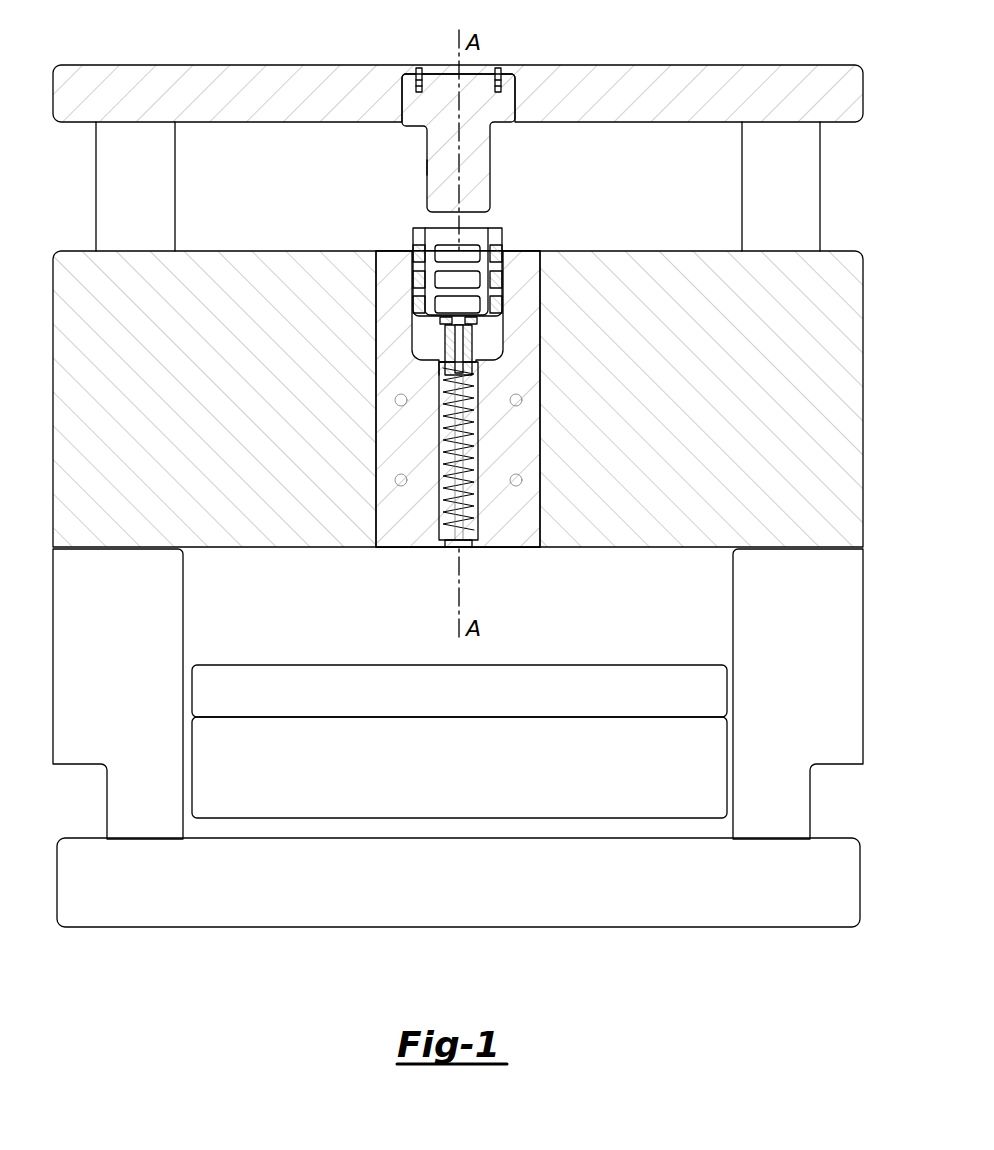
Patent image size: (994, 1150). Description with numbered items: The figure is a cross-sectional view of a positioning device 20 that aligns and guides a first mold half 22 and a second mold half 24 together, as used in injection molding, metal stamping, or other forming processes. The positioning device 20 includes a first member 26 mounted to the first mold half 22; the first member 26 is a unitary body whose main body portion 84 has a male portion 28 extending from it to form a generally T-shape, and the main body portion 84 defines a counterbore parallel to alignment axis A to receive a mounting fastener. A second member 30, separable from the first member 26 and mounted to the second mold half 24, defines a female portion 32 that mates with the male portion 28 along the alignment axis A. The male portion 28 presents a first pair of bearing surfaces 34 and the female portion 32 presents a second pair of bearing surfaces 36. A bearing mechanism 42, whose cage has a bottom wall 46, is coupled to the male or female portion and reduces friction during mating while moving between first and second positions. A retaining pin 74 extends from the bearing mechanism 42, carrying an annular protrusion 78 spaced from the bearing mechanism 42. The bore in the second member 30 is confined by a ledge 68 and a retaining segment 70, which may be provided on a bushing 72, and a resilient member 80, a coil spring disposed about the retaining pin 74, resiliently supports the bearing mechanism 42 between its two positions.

The positioning device 20 is at (402, 210).
The first mold half 22 is at (612, 72).
The second mold half 24 is at (852, 300).
The first member 26 is at (432, 78).
The male portion 28 is at (480, 162).
The second member 30 is at (410, 550).
The female portion 32 is at (525, 258).
The first pair of bearing surfaces 34 is at (428, 164).
The second pair of bearing surfaces 36 is at (432, 340).
The bearing mechanism 42 is at (398, 236).
The bottom wall 46 is at (420, 322).
The ledge 68 is at (443, 360).
The retaining segment 70 is at (468, 548).
The bushing 72 is at (478, 452).
The retaining pin 74 is at (476, 352).
The protrusion 78 is at (445, 366).
The resilient member 80 is at (448, 512).
The main body portion 84 is at (412, 102).